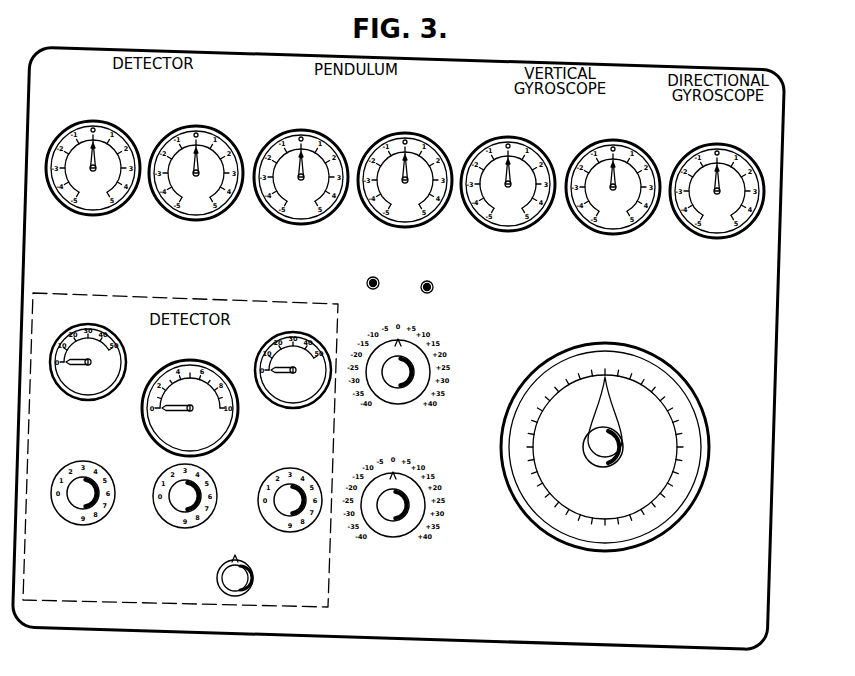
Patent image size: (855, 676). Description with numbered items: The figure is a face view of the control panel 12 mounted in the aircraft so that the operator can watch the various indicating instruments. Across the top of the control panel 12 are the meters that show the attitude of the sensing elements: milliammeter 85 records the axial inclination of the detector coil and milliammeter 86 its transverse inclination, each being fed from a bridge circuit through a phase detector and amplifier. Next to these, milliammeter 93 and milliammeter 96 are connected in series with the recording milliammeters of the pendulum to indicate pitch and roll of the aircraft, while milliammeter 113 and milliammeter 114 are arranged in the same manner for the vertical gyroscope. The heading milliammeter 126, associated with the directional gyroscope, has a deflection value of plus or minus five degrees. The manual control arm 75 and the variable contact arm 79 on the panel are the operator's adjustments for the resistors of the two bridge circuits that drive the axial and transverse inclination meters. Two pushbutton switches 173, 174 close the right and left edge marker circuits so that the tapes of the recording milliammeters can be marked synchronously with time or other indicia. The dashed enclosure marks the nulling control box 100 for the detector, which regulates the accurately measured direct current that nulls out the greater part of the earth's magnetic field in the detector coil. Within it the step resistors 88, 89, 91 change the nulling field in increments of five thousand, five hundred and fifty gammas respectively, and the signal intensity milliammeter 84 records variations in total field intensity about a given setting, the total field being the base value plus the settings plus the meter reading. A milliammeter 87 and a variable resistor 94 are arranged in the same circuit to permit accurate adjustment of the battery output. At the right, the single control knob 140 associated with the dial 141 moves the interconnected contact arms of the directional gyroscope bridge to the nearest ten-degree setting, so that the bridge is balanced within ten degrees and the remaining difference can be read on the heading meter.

The control panel 12 is at (389, 636).
The milliammeter 85 is at (82, 214).
The milliammeter 86 is at (190, 219).
The milliammeter 93 is at (296, 222).
The milliammeter 96 is at (399, 225).
The milliammeter 113 is at (502, 229).
The milliammeter 114 is at (604, 232).
The milliammeter 126 is at (707, 236).
The pushbutton switch 174 is at (371, 277).
The pushbutton switch 173 is at (443, 258).
The nulling control box 100 is at (330, 569).
The milliammeter 87 is at (82, 323).
The milliammeter 84 is at (147, 428).
The step resistor 88 is at (63, 468).
The step resistor 89 is at (165, 474).
The step resistor 91 is at (268, 478).
The variable resistor 94 is at (253, 586).
The manual control arm 75 is at (422, 350).
The variable contact arm 79 is at (392, 463).
The dial 141 is at (708, 430).
The control knob 140 is at (587, 455).